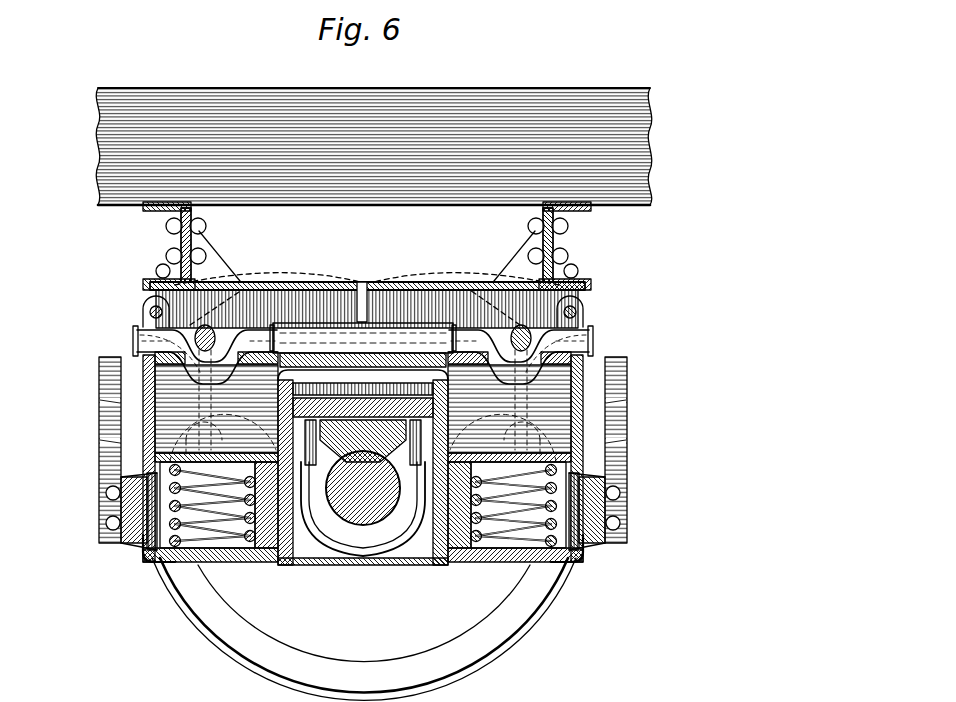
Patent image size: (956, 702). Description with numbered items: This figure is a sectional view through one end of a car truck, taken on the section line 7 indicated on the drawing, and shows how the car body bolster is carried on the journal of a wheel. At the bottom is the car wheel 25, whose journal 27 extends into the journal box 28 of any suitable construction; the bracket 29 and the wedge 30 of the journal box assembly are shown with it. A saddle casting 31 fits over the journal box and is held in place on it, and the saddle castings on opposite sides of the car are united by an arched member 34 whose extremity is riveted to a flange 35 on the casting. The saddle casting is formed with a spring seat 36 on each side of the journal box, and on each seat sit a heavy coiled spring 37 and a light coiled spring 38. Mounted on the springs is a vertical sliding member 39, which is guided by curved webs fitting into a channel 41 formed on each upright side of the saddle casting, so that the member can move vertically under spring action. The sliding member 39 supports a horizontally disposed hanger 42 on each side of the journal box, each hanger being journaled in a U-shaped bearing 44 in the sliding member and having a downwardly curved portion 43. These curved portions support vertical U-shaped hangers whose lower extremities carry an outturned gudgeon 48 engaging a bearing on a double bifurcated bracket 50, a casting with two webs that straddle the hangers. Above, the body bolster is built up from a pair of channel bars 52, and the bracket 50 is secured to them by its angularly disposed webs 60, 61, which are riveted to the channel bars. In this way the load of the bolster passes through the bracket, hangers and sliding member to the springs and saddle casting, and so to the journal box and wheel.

The line 7— 7 is at (48, 498).
The car wheel 25 is at (523, 616).
The journal 27 is at (372, 525).
The journal box 28 is at (330, 563).
The bracket 29 is at (366, 448).
The wedge 30 is at (336, 428).
The saddle casting 31 is at (287, 566).
The arched member 34 is at (106, 420).
The flange 35 is at (125, 543).
The spring seat 36 is at (262, 563).
The heavy coiled spring 37 is at (152, 546).
The light coiled spring 38 is at (182, 537).
The vertical sliding member 39 is at (148, 385).
The channel 41 is at (208, 326).
The horizontally disposed hanger 42 is at (134, 341).
The downwardly curved portion 43 is at (262, 340).
The U-shaped bearing 44 is at (145, 313).
The outturned gudgeon 48 is at (180, 439).
The double bifurcated bracket 50 is at (222, 284).
The channel bar 52 is at (158, 203).
The angularly disposed web 60 is at (150, 282).
The angularly disposed web 61 is at (186, 241).